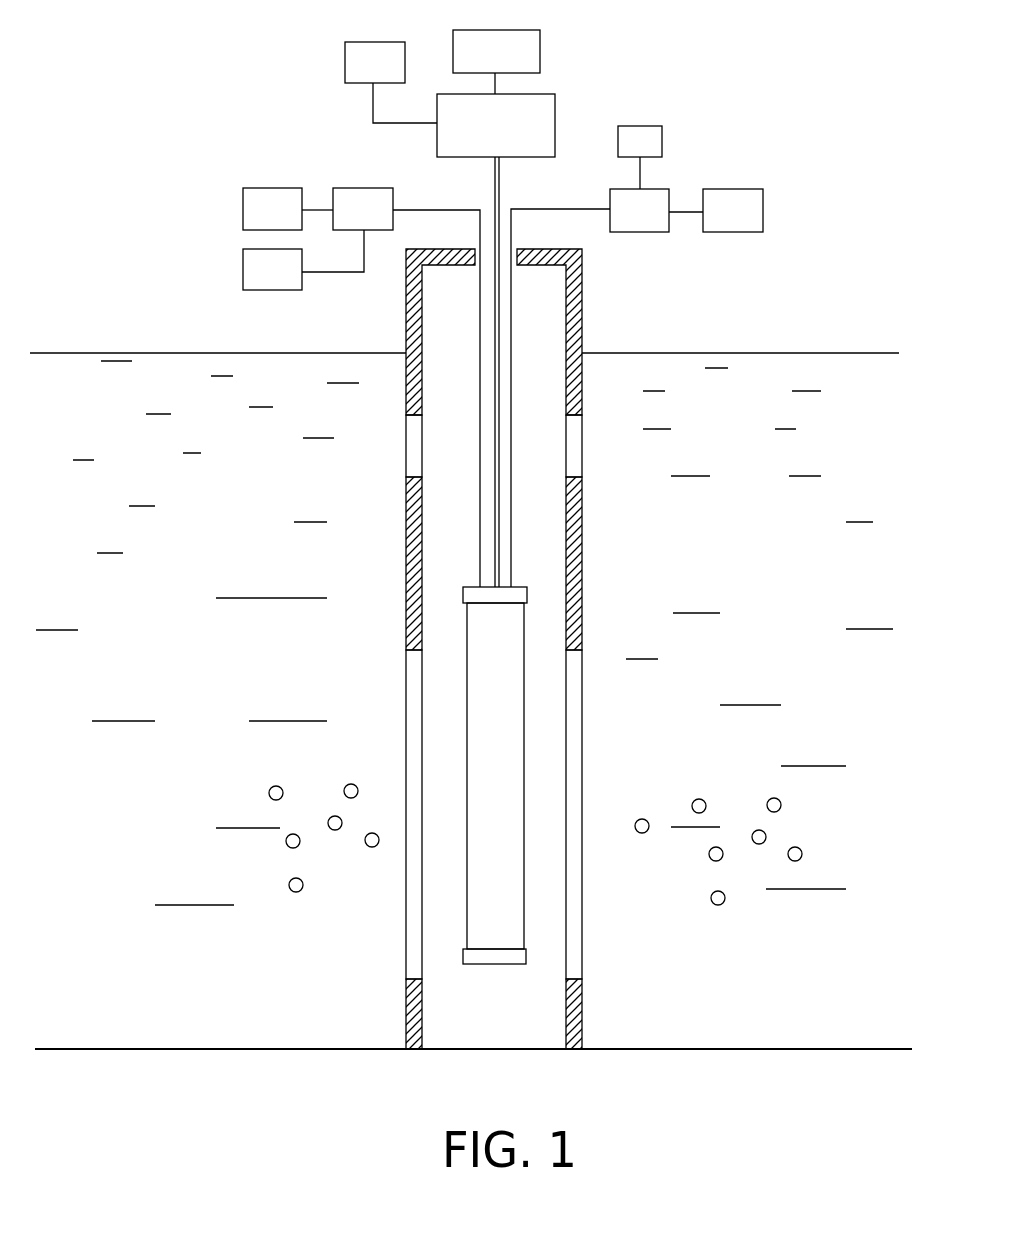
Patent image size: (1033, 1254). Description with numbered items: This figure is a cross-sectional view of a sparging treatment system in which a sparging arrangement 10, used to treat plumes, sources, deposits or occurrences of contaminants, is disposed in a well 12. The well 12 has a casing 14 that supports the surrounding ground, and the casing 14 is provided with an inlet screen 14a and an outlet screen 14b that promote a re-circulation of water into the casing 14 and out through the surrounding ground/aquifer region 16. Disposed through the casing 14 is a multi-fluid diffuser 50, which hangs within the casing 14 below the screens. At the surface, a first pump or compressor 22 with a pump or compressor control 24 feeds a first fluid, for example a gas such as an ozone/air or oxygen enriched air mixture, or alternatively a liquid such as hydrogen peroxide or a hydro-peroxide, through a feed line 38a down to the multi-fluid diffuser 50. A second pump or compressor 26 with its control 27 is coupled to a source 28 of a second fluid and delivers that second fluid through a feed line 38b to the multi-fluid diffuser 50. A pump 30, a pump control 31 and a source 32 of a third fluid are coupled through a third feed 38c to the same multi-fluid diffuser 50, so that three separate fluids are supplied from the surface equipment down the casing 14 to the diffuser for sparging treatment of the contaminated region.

The sparging arrangement 10 is at (213, 63).
The well 12 is at (583, 333).
The casing 14 is at (406, 298).
The inlet screen 14a is at (582, 565).
The outlet screen 14b is at (582, 840).
The ground/aquifer region 16 is at (770, 572).
The first pump or compressor 22 is at (660, 232).
The pump or compressor control 24 is at (640, 126).
The second pump or compressor 26 is at (479, 139).
The control 27 is at (480, 66).
The source 28 is at (375, 42).
The pump 30 is at (374, 188).
The pump control 31 is at (283, 290).
The source 32 is at (268, 188).
The feed line 38a is at (513, 227).
The feed line 38b is at (497, 192).
The third feed 38c is at (481, 213).
The multi-fluid diffuser 50 is at (524, 795).